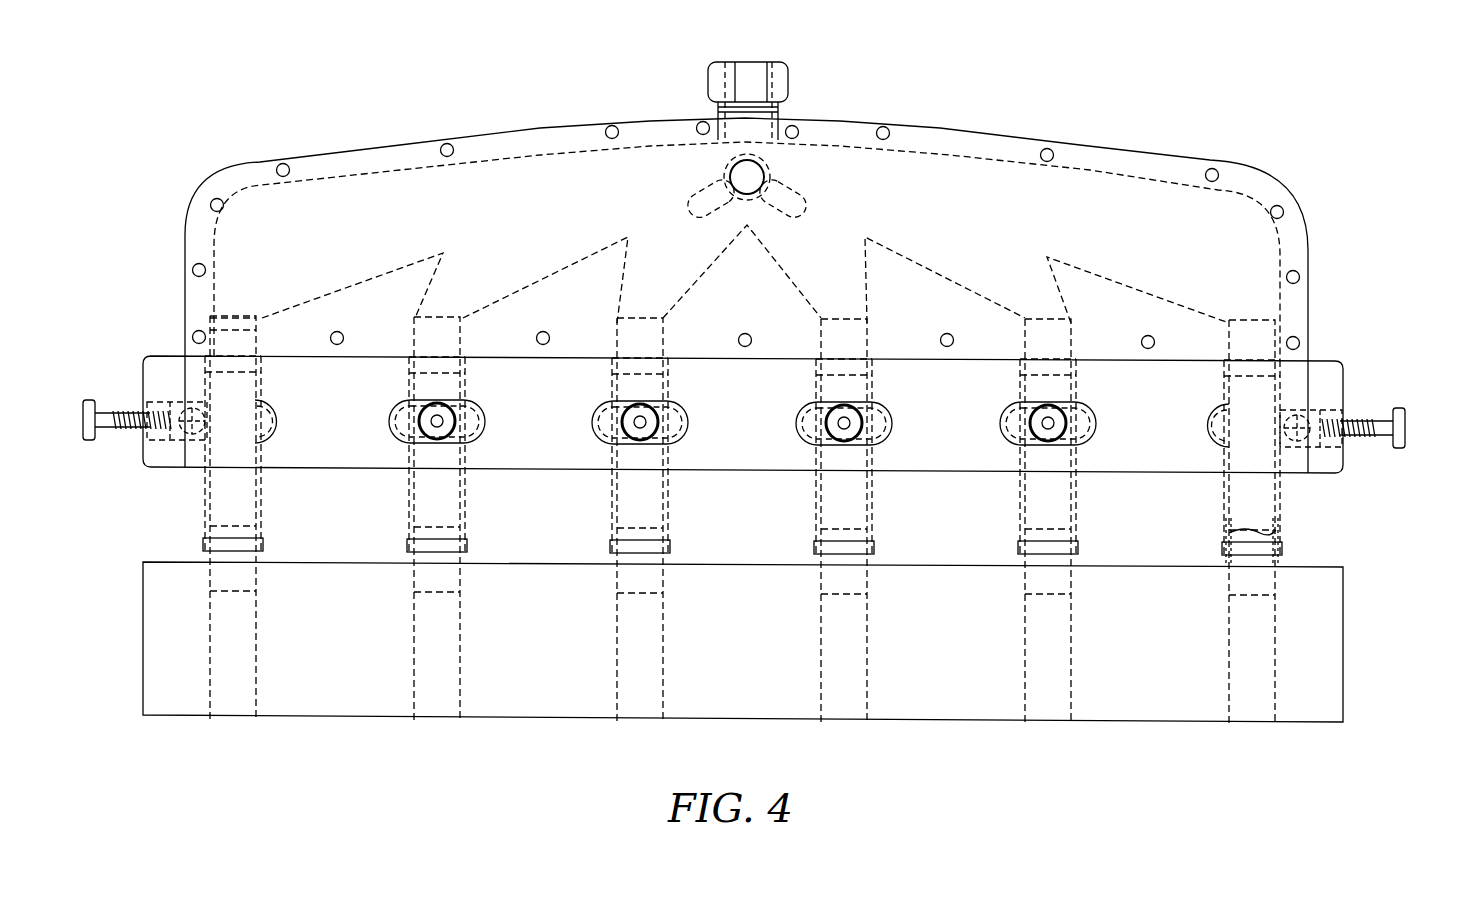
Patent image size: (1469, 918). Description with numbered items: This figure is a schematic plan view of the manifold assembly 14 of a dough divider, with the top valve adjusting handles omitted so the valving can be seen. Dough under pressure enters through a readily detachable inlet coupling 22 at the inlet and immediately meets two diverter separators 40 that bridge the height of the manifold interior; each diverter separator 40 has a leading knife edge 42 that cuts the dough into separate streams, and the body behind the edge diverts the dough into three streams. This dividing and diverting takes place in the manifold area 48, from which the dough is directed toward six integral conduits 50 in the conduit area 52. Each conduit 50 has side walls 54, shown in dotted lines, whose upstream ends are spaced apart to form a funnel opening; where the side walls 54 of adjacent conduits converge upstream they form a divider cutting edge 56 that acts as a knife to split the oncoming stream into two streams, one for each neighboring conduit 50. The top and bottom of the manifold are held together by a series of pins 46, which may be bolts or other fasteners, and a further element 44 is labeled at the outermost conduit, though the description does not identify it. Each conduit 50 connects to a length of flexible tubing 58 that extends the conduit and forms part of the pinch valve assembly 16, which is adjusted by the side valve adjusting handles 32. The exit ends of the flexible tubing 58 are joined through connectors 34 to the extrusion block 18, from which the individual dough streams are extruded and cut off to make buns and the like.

The manifold assembly 14 is at (1103, 150).
The pinch valve assembly 16 is at (1182, 473).
The extrusion block 18 is at (1138, 721).
The inlet coupling 22 is at (780, 63).
The side valve adjusting handles 32 is at (133, 415).
The connectors 34 is at (1263, 533).
The diverter separators 40 is at (700, 191).
The leading knife edge 42 is at (768, 165).
The clamp tab 44 is at (238, 343).
The pins 46 is at (334, 332).
The manifold area 48 is at (896, 195).
The integral conduits 50 is at (291, 250).
The conduit area 52 is at (1225, 280).
The side walls 54 is at (1050, 270).
The divider cutting edge 56 is at (443, 253).
The flexible tubing 58 is at (208, 497).